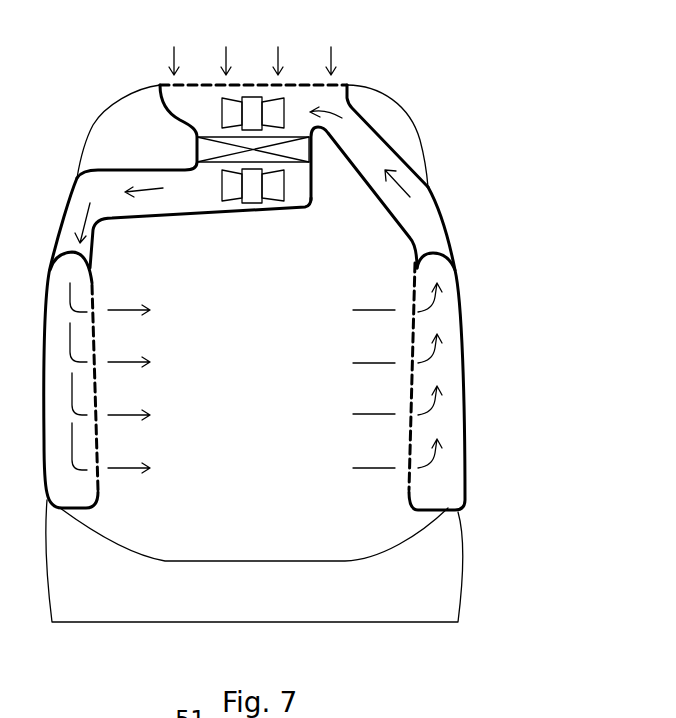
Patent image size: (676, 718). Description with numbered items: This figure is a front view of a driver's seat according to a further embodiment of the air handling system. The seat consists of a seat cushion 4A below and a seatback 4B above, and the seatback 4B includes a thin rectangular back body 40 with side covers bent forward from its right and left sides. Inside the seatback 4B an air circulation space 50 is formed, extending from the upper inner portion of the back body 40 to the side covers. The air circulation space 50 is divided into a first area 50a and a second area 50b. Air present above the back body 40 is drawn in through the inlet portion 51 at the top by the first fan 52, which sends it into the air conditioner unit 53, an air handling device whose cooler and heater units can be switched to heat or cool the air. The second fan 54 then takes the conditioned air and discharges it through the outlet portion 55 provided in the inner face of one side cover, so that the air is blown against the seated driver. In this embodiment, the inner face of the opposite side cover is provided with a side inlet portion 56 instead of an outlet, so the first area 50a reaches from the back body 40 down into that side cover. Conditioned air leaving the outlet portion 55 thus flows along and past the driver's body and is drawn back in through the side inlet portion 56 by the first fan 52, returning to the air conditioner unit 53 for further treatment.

The seat cushion 4A is at (440, 565).
The seatback 4B is at (405, 137).
The back body 40 is at (247, 319).
The air circulation space 50 is at (274, 166).
The first area 50a is at (363, 145).
The second area 50b is at (145, 203).
The inlet portion 51 is at (197, 83).
The first fan 52 is at (232, 113).
The air conditioner unit 53 is at (296, 148).
The second fan 54 is at (232, 193).
The outlet portion 55 is at (102, 385).
The side inlet portion 56 is at (408, 385).